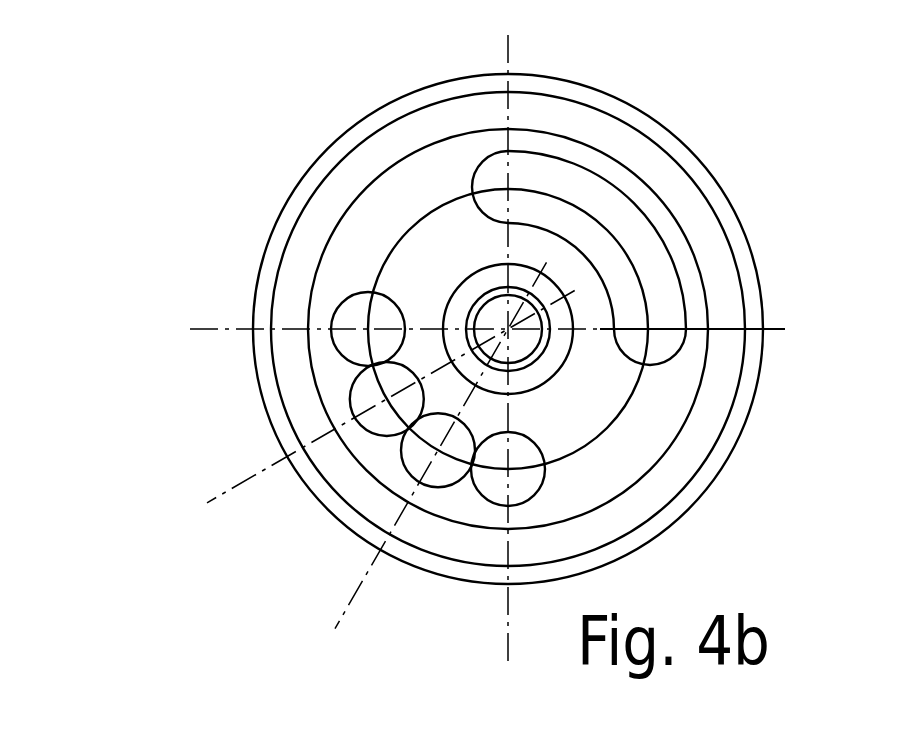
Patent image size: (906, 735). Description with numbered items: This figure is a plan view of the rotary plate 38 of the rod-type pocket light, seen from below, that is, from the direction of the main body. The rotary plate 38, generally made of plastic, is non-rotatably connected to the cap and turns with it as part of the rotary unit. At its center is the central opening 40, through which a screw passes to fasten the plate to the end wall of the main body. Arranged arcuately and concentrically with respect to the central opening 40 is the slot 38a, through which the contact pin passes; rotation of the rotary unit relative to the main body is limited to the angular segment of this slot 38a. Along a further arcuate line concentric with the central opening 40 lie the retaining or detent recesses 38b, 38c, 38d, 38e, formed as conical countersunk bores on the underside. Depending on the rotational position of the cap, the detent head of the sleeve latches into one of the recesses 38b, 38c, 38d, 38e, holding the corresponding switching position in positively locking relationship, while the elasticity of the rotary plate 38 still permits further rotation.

The rotary plate 38 is at (212, 129).
The slot 38a is at (643, 238).
The retaining or detent recess 38b is at (351, 309).
The retaining or detent recess 38c is at (360, 390).
The retaining or detent recess 38d is at (420, 458).
The retaining or detent recess 38e is at (490, 490).
The central opening 40 is at (503, 327).